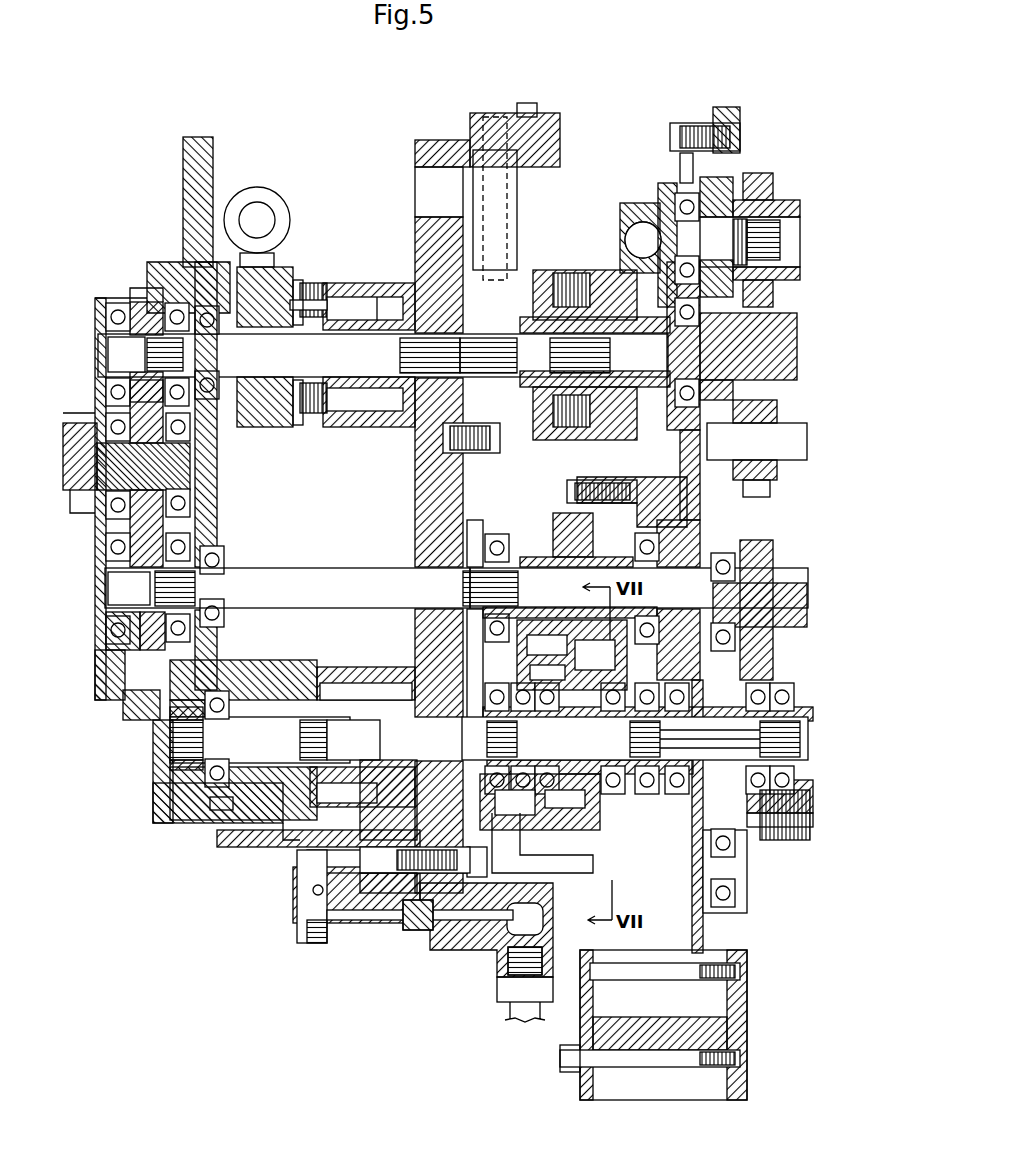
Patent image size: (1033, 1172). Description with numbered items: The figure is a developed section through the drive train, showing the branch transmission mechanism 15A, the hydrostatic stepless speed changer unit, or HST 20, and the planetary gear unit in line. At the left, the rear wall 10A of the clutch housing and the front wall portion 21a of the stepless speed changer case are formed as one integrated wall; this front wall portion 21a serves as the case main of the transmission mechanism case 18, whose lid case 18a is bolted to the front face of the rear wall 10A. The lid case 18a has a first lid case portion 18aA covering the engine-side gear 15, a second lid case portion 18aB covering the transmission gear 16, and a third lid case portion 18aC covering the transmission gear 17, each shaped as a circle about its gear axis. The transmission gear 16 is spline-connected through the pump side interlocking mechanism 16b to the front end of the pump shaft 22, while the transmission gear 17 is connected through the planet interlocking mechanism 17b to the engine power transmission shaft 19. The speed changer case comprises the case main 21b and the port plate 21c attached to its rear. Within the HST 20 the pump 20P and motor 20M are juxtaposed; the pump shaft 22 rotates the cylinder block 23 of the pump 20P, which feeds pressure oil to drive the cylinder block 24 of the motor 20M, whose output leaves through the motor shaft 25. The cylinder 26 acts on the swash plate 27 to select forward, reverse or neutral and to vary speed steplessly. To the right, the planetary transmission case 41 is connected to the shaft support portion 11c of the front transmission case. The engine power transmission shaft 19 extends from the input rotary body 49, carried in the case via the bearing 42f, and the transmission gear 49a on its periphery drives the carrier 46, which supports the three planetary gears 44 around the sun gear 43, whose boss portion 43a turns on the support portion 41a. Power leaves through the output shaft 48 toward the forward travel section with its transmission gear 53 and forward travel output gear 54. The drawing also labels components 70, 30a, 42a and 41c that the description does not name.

The rear wall 10A is at (185, 160).
The branch transmission mechanism 15A is at (135, 250).
The transmission mechanism case 18 is at (84, 182).
The lid case 18a is at (120, 268).
The transmission gear 16 is at (140, 300).
The pump side interlocking mechanism 16b is at (150, 352).
The second lid case portion 18aB is at (95, 330).
The first lid case portion 18aA is at (90, 430).
The third lid case portion 18aC is at (97, 630).
The cylinder 26 is at (257, 203).
The HST 20 is at (318, 250).
The pump 20P is at (350, 285).
The cylinder block 23 is at (365, 290).
The port plate 21c is at (418, 235).
The clutch 70 is at (575, 255).
The pump shaft 22 is at (275, 372).
The swash plate 27 is at (280, 400).
The gear hub 30a is at (185, 465).
The engine-side gear 15 is at (208, 532).
The engine power transmission shaft 19 is at (328, 580).
The planet interlocking mechanism 17b is at (150, 595).
The transmission gear 17 is at (122, 720).
The motor shaft 25 is at (262, 705).
The cylinder block 24 is at (375, 675).
The front wall portion 21a is at (150, 822).
The case main 21b is at (235, 850).
The motor 20M is at (313, 803).
The gear hub 42a is at (493, 777).
The flange 41c is at (475, 525).
The bearing 42f is at (490, 545).
The transmission gear 49a is at (525, 550).
The planetary transmission case 41 is at (545, 520).
The input rotary body 49 is at (580, 565).
The support portion 41a is at (590, 588).
The planetary gears 44 is at (573, 633).
The shaft support portion 11c is at (695, 505).
The forward travel output gear 54 is at (760, 545).
The boss portion 43a is at (520, 720).
The output shaft 48 is at (627, 742).
The sun gear 43 is at (608, 833).
The carrier 46 is at (540, 850).
The transmission gear 53 is at (760, 820).